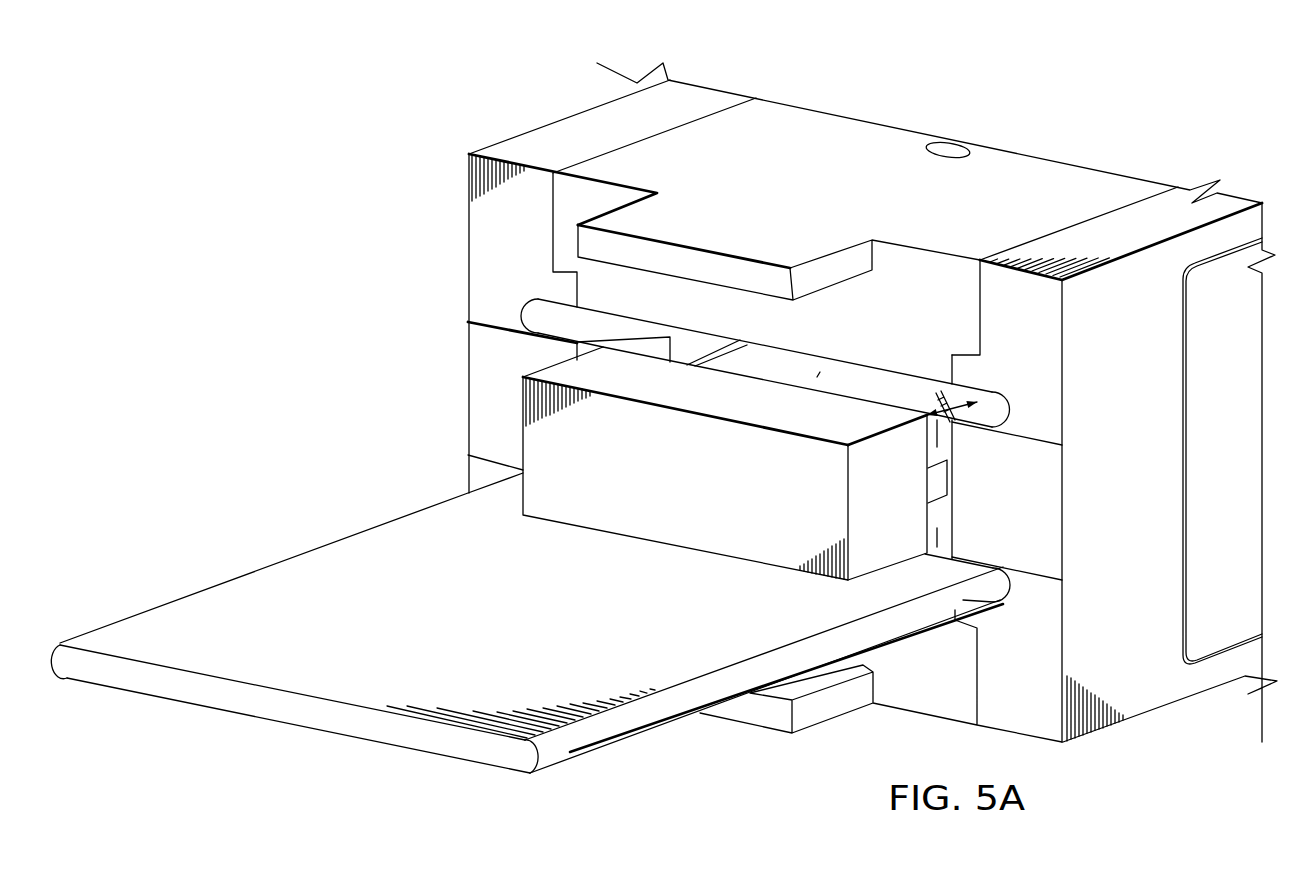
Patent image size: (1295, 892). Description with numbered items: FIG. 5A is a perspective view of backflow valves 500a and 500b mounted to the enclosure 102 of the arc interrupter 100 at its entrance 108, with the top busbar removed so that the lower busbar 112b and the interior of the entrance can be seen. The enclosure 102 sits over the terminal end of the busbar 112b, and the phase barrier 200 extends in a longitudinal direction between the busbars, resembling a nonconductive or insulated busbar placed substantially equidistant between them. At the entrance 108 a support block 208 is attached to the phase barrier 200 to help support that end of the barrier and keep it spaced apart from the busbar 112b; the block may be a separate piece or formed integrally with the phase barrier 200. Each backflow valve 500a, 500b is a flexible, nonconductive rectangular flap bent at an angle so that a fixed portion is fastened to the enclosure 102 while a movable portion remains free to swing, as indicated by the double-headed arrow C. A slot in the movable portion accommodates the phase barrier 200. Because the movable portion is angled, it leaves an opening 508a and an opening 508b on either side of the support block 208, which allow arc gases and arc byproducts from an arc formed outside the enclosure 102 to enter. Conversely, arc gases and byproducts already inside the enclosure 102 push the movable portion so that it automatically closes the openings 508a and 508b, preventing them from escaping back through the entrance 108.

The arc interrupter 100 is at (440, 74).
The enclosure 102 is at (470, 236).
The entrance 108 is at (333, 350).
The busbar 112b is at (290, 558).
The phase barrier 200 is at (817, 377).
The support block 208 is at (672, 543).
The backflow valve 500a is at (475, 387).
The backflow valve 500b is at (1048, 505).
The opening 508a is at (630, 342).
The opening 508b is at (942, 556).
The double-headed arrow C is at (947, 385).